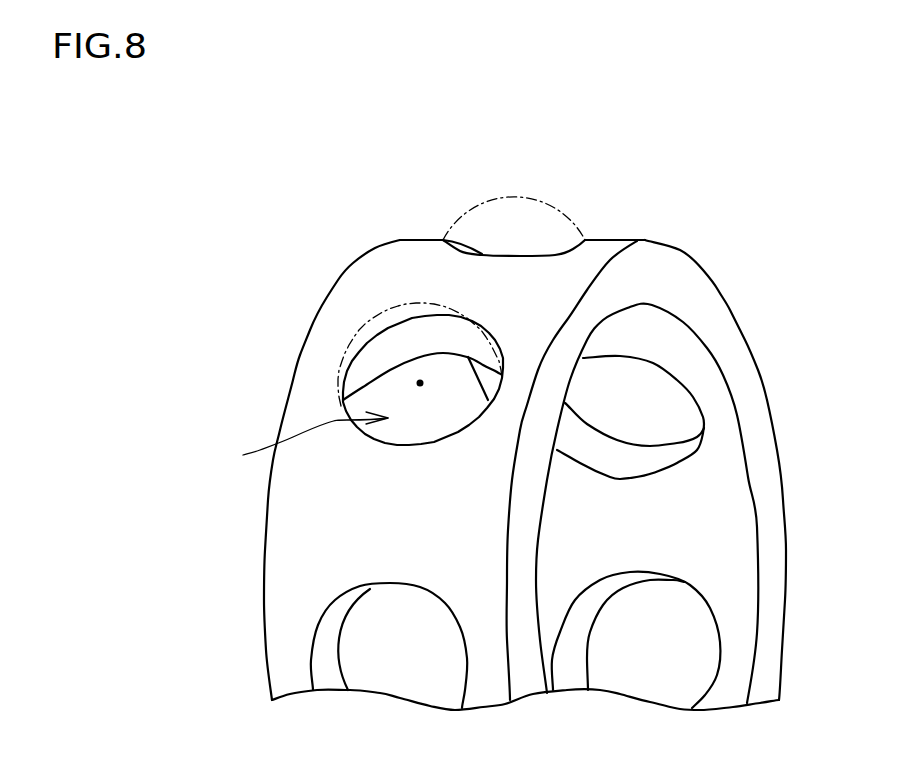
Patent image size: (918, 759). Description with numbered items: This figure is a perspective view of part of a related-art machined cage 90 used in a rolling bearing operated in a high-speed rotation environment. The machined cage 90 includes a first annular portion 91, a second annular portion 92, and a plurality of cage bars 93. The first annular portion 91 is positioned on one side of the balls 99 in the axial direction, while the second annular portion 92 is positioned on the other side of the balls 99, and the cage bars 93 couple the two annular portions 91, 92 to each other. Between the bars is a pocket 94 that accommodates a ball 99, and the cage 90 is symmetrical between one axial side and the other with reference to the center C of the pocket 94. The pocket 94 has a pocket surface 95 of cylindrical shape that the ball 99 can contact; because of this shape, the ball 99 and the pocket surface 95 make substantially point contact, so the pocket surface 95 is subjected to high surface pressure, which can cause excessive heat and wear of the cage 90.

The machined cage 90 is at (678, 243).
The first annular portion 91 is at (320, 362).
The second annular portion 92 is at (513, 378).
The cage bar 93 is at (453, 285).
The pocket 94 is at (300, 443).
The pocket surface 95 is at (387, 352).
The ball 99 is at (525, 197).
The center of pocket C is at (420, 383).